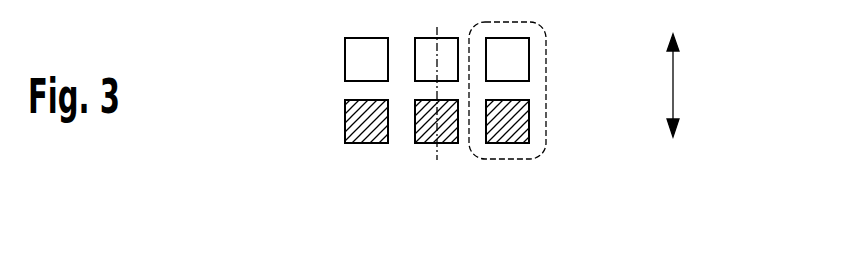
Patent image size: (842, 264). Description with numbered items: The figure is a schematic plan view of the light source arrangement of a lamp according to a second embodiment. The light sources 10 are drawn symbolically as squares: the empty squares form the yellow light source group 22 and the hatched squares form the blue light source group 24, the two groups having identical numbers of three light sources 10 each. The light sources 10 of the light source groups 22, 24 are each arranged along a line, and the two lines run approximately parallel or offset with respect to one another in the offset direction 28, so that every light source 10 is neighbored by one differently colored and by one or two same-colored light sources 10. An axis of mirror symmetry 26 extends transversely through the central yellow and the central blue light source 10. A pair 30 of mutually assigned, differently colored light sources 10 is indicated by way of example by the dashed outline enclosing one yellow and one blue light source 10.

The light sources 10 is at (307, 38).
The yellow light source group 22 is at (582, 28).
The blue light source group 24 is at (582, 95).
The axis of mirror symmetry 26 is at (431, 153).
The offset direction 28 is at (674, 85).
The pair of differently colored light sources 30 is at (510, 160).